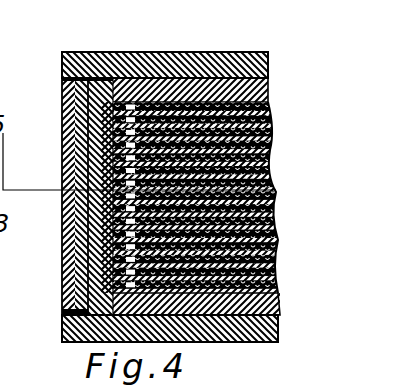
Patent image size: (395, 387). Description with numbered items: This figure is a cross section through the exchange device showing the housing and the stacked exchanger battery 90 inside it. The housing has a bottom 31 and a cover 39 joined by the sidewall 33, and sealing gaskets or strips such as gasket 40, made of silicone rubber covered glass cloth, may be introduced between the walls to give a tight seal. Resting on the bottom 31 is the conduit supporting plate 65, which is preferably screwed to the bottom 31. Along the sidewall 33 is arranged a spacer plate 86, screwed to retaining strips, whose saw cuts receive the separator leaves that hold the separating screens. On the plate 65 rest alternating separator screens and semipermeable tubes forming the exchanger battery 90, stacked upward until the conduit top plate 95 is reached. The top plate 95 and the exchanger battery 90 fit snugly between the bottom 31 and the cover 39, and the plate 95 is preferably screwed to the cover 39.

The bottom 31 is at (279, 326).
The sidewall 33 is at (63, 266).
The cover 39 is at (207, 53).
The sealing gasket 40 is at (63, 79).
The conduit supporting plate 65 is at (273, 308).
The spacer plate 86 is at (74, 312).
The exchanger battery 90 is at (291, 173).
The conduit top plate 95 is at (267, 91).